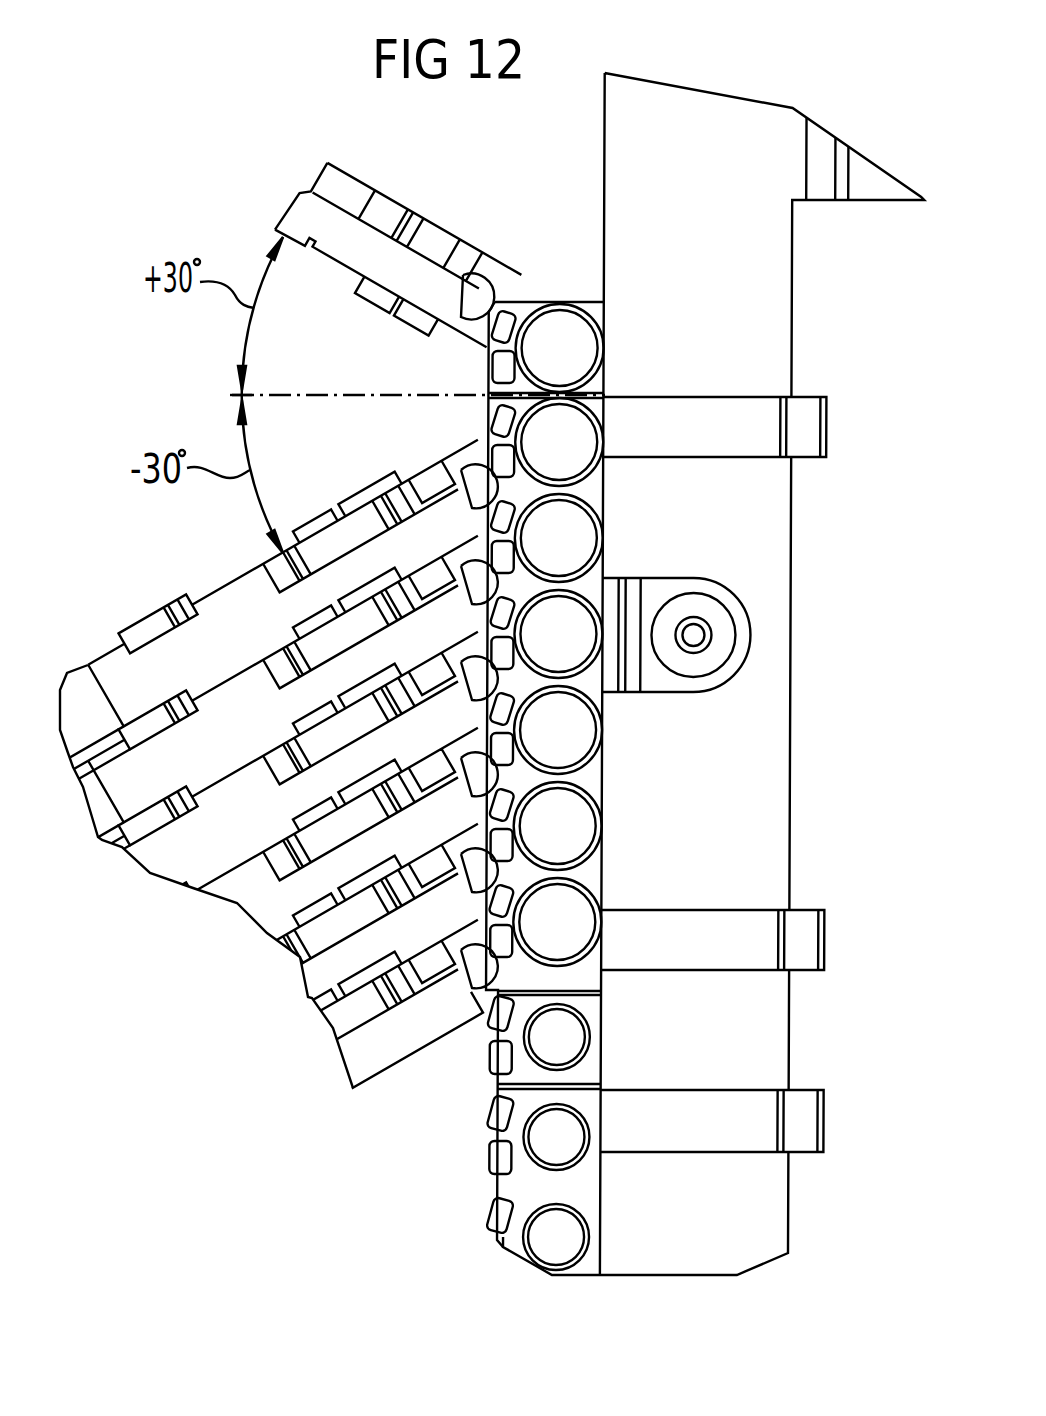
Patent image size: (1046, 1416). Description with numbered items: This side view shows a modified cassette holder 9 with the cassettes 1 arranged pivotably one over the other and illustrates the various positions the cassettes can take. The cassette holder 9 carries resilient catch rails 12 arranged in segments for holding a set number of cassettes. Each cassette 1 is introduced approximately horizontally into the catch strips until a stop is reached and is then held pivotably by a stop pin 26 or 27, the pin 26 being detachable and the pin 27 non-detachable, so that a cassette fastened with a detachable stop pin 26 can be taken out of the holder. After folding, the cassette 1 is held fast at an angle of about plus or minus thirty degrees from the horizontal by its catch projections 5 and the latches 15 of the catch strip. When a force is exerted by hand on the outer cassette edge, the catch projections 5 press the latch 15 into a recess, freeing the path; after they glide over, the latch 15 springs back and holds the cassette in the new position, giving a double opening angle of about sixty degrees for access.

The cassette 1 is at (190, 585).
The catch projections 5 is at (568, 912).
The cassette holder 9 is at (693, 125).
The catch rails 12 is at (680, 421).
The latch 15 is at (491, 1160).
The stop pin 26 is at (566, 330).
The stop pin 27 is at (558, 787).